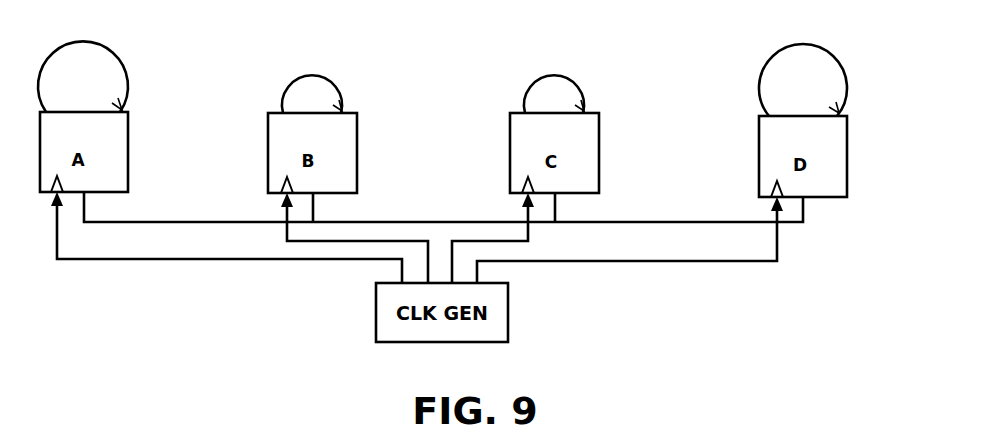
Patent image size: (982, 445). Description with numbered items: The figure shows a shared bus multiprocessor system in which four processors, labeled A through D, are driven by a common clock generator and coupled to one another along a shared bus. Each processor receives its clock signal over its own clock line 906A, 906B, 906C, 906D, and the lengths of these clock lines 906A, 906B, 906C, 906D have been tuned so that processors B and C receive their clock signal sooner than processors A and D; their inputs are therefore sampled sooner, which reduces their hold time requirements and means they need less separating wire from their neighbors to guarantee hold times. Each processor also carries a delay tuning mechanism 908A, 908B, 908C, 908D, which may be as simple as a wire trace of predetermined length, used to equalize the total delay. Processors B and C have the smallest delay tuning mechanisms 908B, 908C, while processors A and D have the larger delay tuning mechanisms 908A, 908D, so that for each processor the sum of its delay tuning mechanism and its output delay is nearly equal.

The clock line 906A is at (150, 259).
The clock line 906B is at (284, 240).
The clock line 906C is at (530, 230).
The clock line 906D is at (736, 261).
The delay tuning mechanism 908A is at (117, 50).
The delay tuning mechanism 908B is at (333, 64).
The delay tuning mechanism 908C is at (577, 64).
The delay tuning mechanism 908D is at (840, 58).